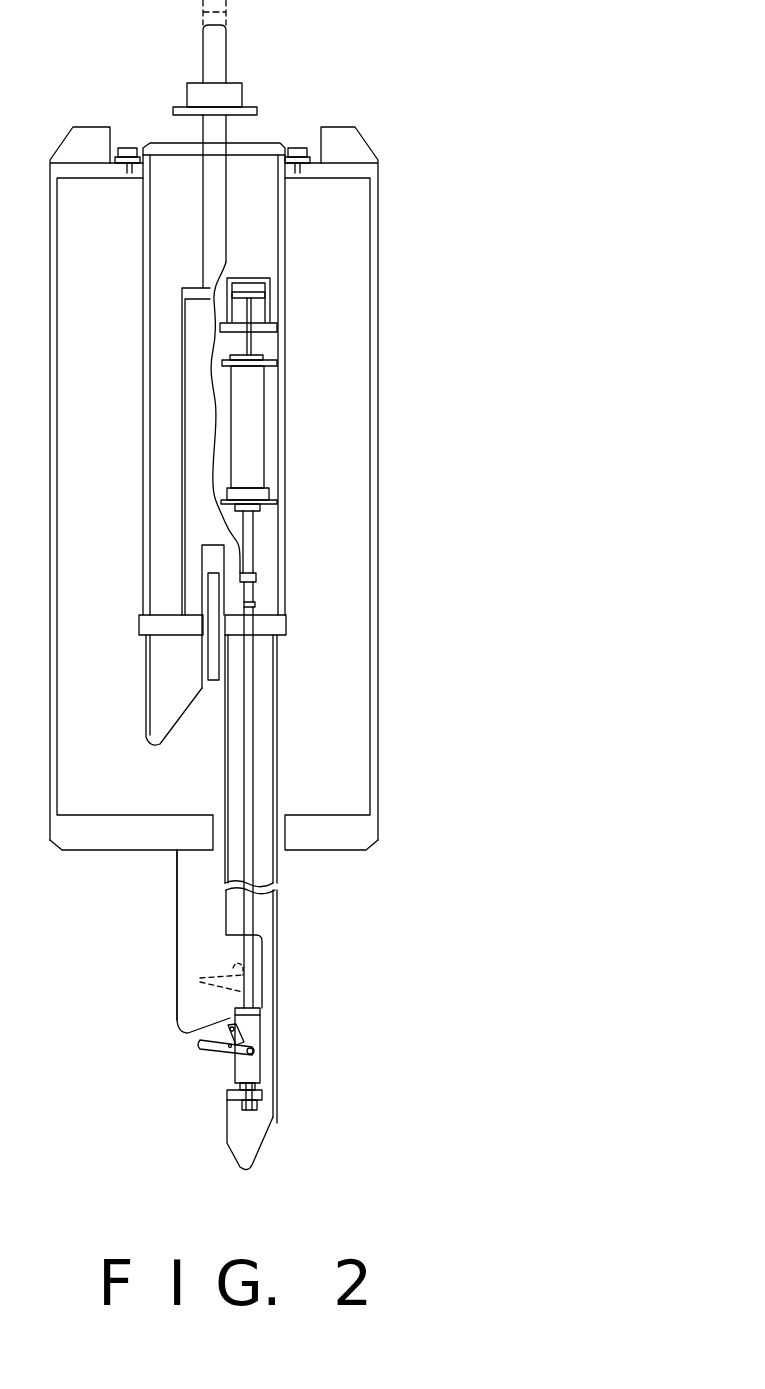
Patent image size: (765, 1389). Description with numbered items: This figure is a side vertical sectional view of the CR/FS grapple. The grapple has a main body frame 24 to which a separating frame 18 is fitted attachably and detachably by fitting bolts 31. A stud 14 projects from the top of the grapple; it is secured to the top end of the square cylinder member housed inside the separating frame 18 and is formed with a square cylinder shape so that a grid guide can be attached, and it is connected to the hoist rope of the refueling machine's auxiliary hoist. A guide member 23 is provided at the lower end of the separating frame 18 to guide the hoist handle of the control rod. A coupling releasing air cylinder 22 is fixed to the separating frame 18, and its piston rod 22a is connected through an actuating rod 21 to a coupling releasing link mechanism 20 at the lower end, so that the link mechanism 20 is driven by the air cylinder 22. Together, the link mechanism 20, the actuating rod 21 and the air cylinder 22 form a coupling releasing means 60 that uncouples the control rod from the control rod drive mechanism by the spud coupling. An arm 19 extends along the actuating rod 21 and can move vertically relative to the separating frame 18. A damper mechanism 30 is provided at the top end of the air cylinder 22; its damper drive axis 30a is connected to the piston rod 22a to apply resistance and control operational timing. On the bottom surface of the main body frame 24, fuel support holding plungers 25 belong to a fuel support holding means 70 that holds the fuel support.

The stud 14 is at (228, 46).
The fitting bolts 31 is at (127, 147).
The main body frame 24 is at (378, 315).
The separating frame 18 is at (282, 423).
The damper mechanism 30 is at (270, 300).
The damper drive axis 30a is at (252, 340).
The coupling releasing air cylinder 22 is at (256, 457).
The piston rod 22a is at (249, 545).
The guide member 23 is at (146, 703).
The actuating rod 21 is at (249, 785).
The arm 19 is at (278, 915).
The fuel support holding means 70 is at (172, 897).
The fuel support holding plunger 25 is at (177, 955).
The coupling releasing means 60 is at (195, 1048).
The coupling releasing link mechanism 20 is at (200, 1050).